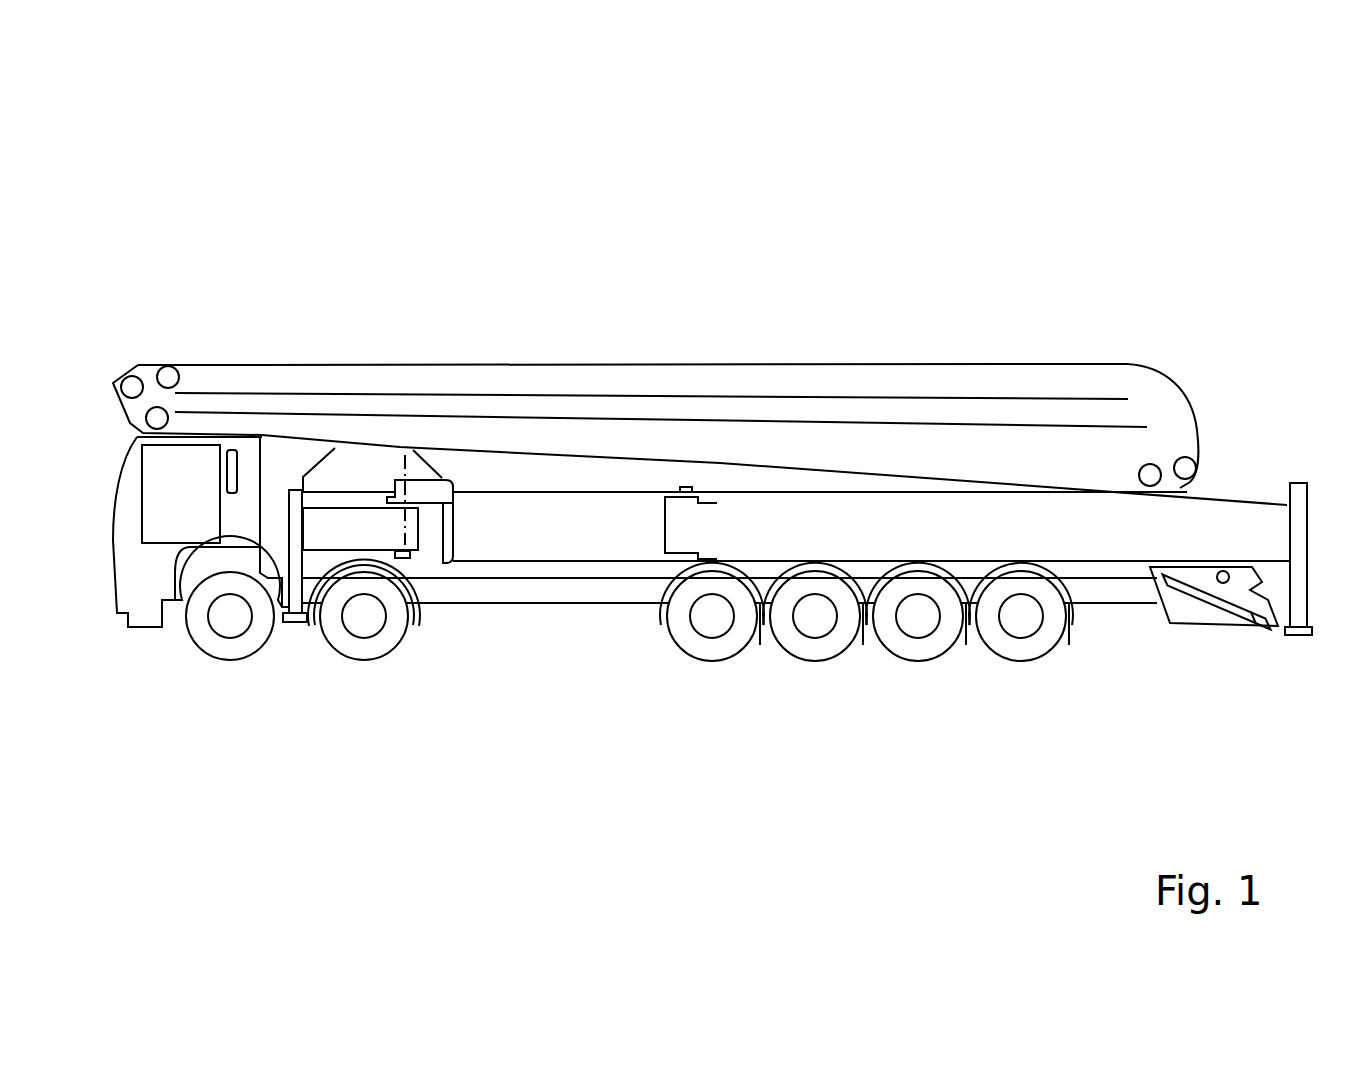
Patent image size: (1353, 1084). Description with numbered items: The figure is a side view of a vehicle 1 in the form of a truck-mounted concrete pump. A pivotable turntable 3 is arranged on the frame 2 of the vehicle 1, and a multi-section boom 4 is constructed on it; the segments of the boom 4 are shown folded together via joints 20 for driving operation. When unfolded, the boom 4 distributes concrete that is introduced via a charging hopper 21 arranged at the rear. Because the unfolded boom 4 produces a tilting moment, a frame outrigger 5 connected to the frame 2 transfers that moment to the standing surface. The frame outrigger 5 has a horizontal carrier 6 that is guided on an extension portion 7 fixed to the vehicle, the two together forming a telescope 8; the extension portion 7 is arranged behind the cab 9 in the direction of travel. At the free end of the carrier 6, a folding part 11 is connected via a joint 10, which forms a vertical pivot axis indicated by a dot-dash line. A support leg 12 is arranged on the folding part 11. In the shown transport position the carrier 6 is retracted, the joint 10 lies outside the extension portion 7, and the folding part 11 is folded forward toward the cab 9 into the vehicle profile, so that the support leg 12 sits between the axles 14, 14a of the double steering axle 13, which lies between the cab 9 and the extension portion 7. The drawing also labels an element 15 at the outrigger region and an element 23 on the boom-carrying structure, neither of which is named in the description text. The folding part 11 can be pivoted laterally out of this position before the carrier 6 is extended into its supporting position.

The vehicle 1 is at (182, 185).
The frame 2 is at (567, 580).
The turntable 3 is at (347, 473).
The boom 4 is at (665, 388).
The frame outrigger 5 is at (540, 547).
The carrier 6 is at (433, 540).
The extension portion 7 is at (475, 508).
The telescope 8 is at (452, 458).
The cab 9 is at (165, 512).
The joint 10 is at (405, 568).
The folding part 11 is at (355, 530).
The support leg 12 is at (298, 603).
The double steering axle 13 is at (213, 667).
The axle 14 is at (188, 631).
The axle 14a is at (332, 643).
The support bearing 15 is at (423, 480).
The joint 20 is at (130, 383).
The charging hopper 21 is at (1202, 605).
The boom rest 23 is at (785, 525).